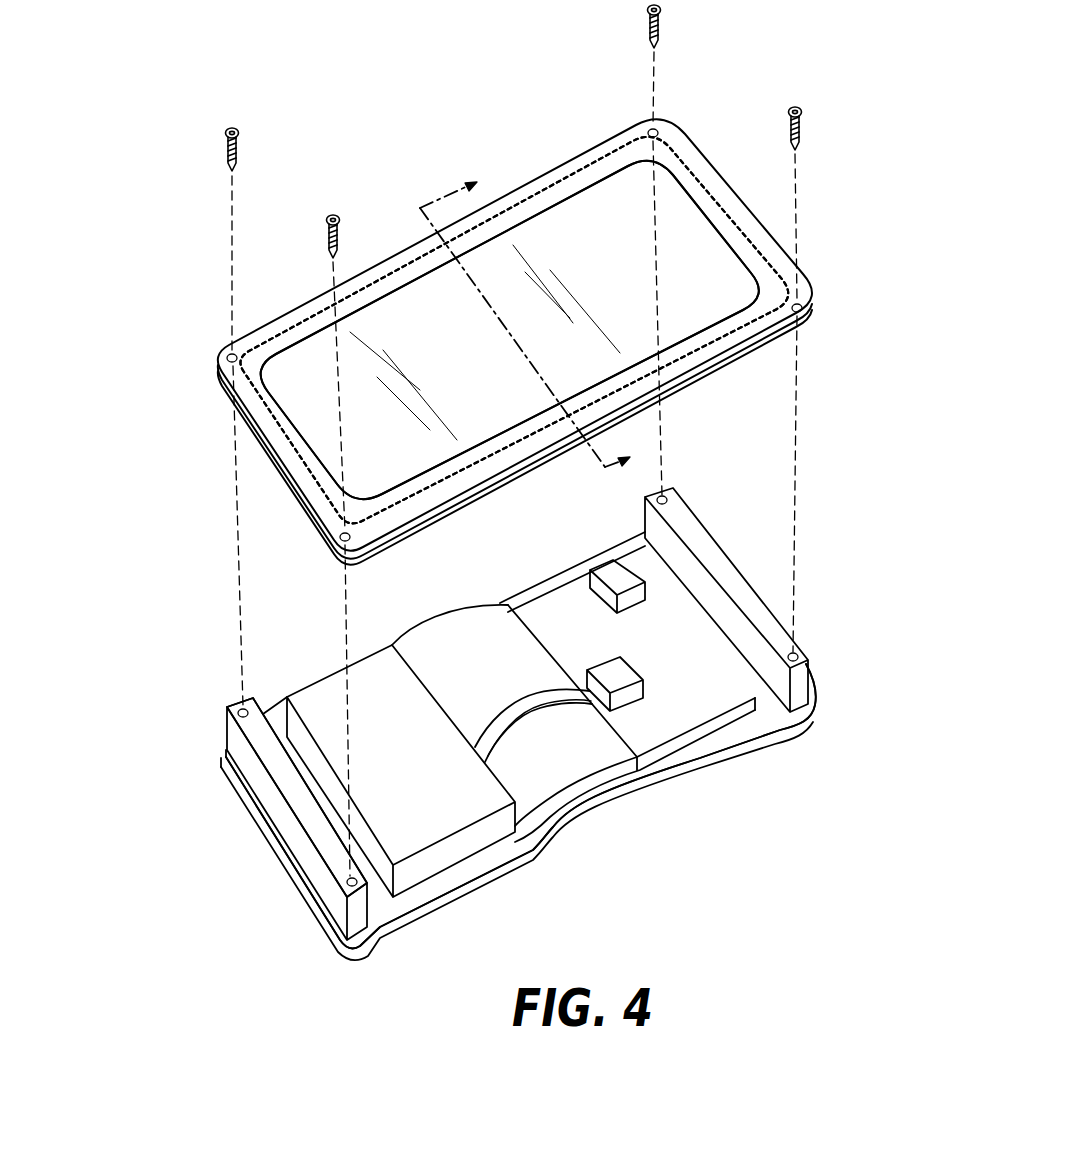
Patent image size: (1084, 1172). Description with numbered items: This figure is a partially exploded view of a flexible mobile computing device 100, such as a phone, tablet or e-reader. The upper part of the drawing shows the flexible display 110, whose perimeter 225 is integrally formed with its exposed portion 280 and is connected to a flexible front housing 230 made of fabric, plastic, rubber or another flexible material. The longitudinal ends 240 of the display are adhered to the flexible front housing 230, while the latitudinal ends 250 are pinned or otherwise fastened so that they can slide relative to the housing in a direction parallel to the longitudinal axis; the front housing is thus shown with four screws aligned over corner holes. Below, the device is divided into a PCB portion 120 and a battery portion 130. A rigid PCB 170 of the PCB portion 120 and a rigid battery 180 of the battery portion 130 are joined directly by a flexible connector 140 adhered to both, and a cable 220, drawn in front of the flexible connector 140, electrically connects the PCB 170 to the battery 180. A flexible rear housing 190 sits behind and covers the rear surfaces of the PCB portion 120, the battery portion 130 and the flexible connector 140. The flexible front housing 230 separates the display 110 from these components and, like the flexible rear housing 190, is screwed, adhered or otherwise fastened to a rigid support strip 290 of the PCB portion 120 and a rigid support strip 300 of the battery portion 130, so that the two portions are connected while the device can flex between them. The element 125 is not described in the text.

The flexible mobile computing device 100 is at (297, 126).
The flexible display 110 is at (535, 243).
The printed circuit board (PCB) portion 120 is at (533, 555).
The gasket seat 125 is at (365, 303).
The battery portion 130 is at (307, 665).
The flexible connector 140 is at (445, 602).
The PCB 170 is at (687, 715).
The battery 180 is at (370, 678).
The flexible rear housing 190 is at (652, 778).
The cable 220 is at (533, 698).
The perimeter 225 is at (620, 173).
The flexible front housing 230 is at (279, 335).
The longitudinal ends 240 is at (710, 218).
The latitudinal ends 250 is at (410, 283).
The exposed portion 280 is at (604, 212).
The rigid support strip 290 is at (805, 692).
The rigid support strip 300 is at (326, 851).